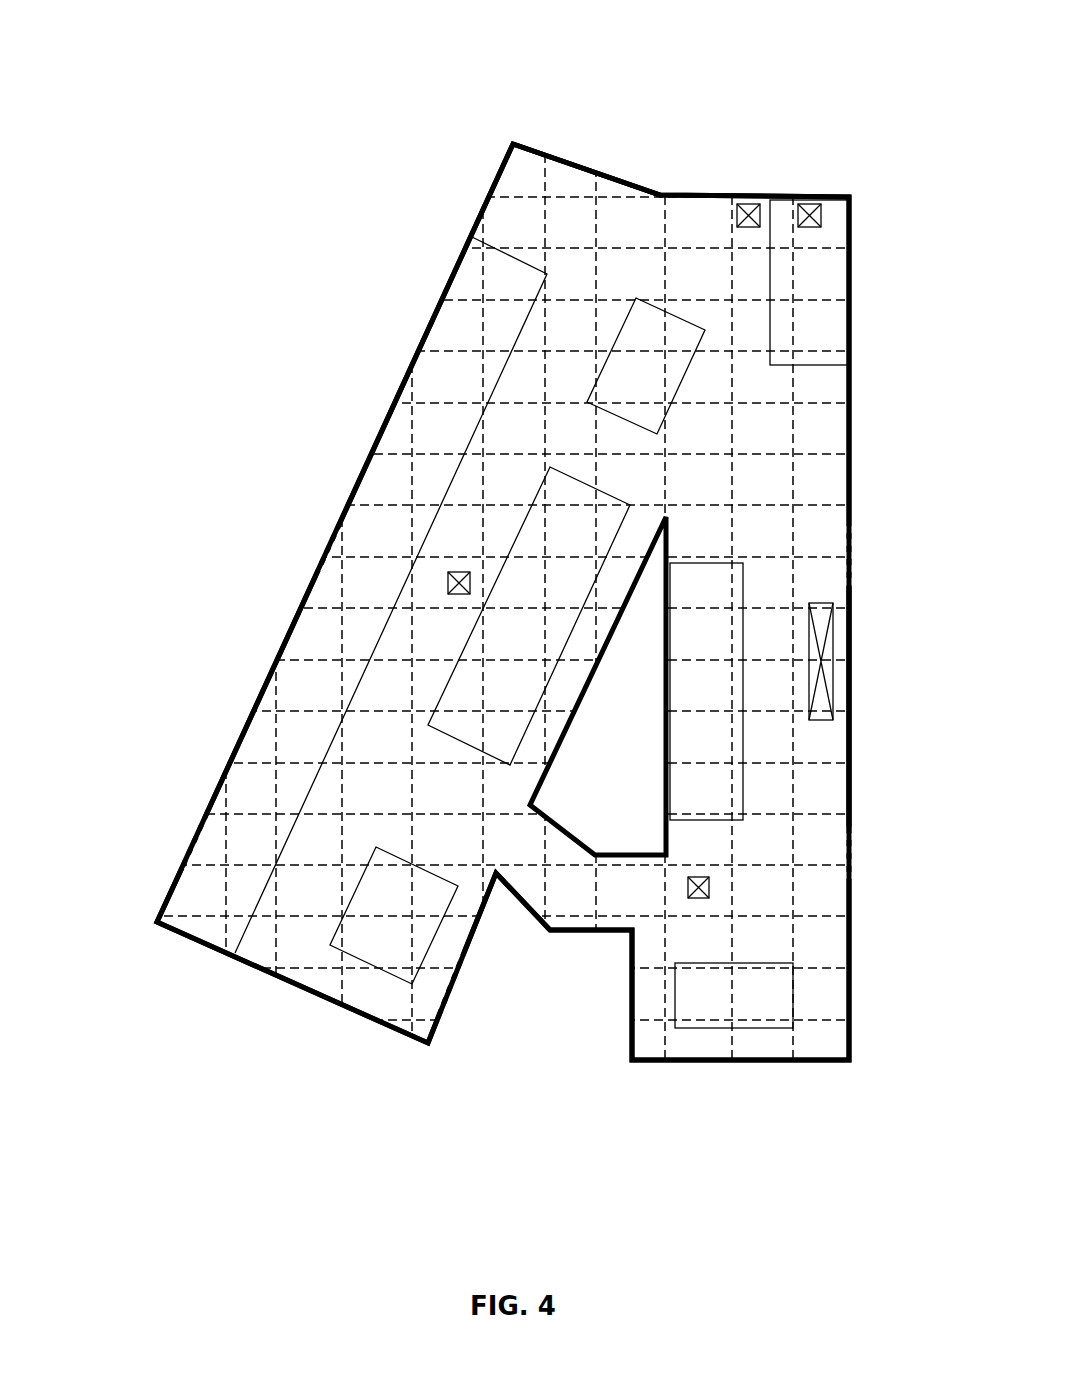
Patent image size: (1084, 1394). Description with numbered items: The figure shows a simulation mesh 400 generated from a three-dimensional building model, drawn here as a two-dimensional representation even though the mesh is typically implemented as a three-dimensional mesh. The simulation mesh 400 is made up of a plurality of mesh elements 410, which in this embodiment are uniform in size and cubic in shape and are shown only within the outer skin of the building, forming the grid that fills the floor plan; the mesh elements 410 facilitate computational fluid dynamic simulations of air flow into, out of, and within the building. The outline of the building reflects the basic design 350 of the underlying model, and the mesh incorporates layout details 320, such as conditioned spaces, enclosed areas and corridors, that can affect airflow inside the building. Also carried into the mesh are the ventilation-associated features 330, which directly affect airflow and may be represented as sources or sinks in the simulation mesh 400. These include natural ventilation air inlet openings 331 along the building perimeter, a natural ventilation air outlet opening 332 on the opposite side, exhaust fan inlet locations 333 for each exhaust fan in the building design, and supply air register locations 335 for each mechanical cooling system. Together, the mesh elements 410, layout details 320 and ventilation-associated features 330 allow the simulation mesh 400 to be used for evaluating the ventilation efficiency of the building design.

The simulation mesh 400 is at (541, 44).
The layout details 320 is at (566, 188).
The ventilation-associated features 330 is at (288, 482).
The natural ventilation air inlet openings 331 is at (298, 527).
The natural ventilation air outlet openings 332 is at (860, 855).
The exhaust fan inlet locations 333 is at (822, 216).
The supply air register locations 335 is at (748, 202).
The basic design 350 is at (608, 176).
The mesh elements 410 is at (445, 320).